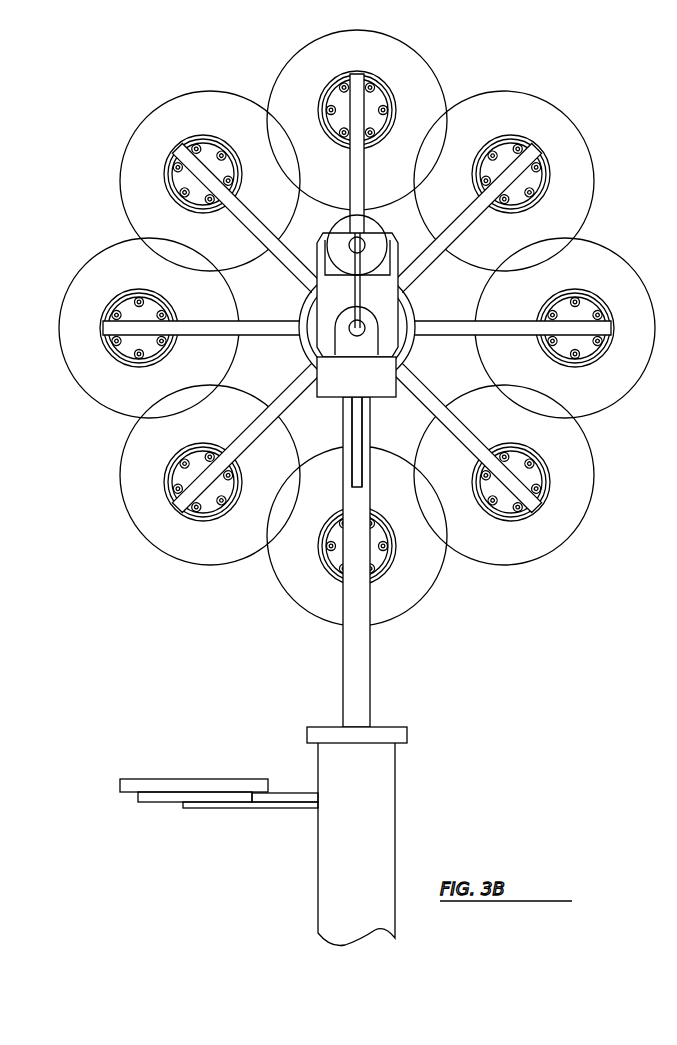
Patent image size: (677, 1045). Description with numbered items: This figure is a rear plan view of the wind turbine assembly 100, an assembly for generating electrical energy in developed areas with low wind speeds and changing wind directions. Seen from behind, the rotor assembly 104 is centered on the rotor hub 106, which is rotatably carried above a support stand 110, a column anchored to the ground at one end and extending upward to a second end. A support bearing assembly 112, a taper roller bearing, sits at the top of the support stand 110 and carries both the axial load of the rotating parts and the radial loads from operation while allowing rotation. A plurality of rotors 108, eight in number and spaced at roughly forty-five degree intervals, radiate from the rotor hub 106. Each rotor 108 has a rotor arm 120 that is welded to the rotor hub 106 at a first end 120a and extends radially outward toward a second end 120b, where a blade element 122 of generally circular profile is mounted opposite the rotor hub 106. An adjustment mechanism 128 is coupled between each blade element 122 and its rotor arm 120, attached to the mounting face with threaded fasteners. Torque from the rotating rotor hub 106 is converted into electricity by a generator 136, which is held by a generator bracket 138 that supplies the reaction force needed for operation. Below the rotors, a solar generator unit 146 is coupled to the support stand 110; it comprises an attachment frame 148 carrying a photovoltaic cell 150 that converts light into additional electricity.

The wind turbine assembly 100 is at (528, 638).
The rotor assembly 104 is at (591, 95).
The rotor hub 106 is at (298, 350).
The rotors 108 is at (93, 234).
The support stand 110 is at (408, 728).
The support bearing assembly 112 is at (328, 384).
The rotor arm 120 is at (302, 270).
The first end 120a is at (401, 425).
The second end 120b is at (558, 507).
The blade element 122 is at (415, 50).
The adjustment mechanism 128 is at (322, 112).
The generator 136 is at (386, 238).
The generator bracket 138 is at (387, 315).
The solar generator unit 146 is at (187, 836).
The attachment frame 148 is at (283, 810).
The photovoltaic cell 150 is at (178, 778).